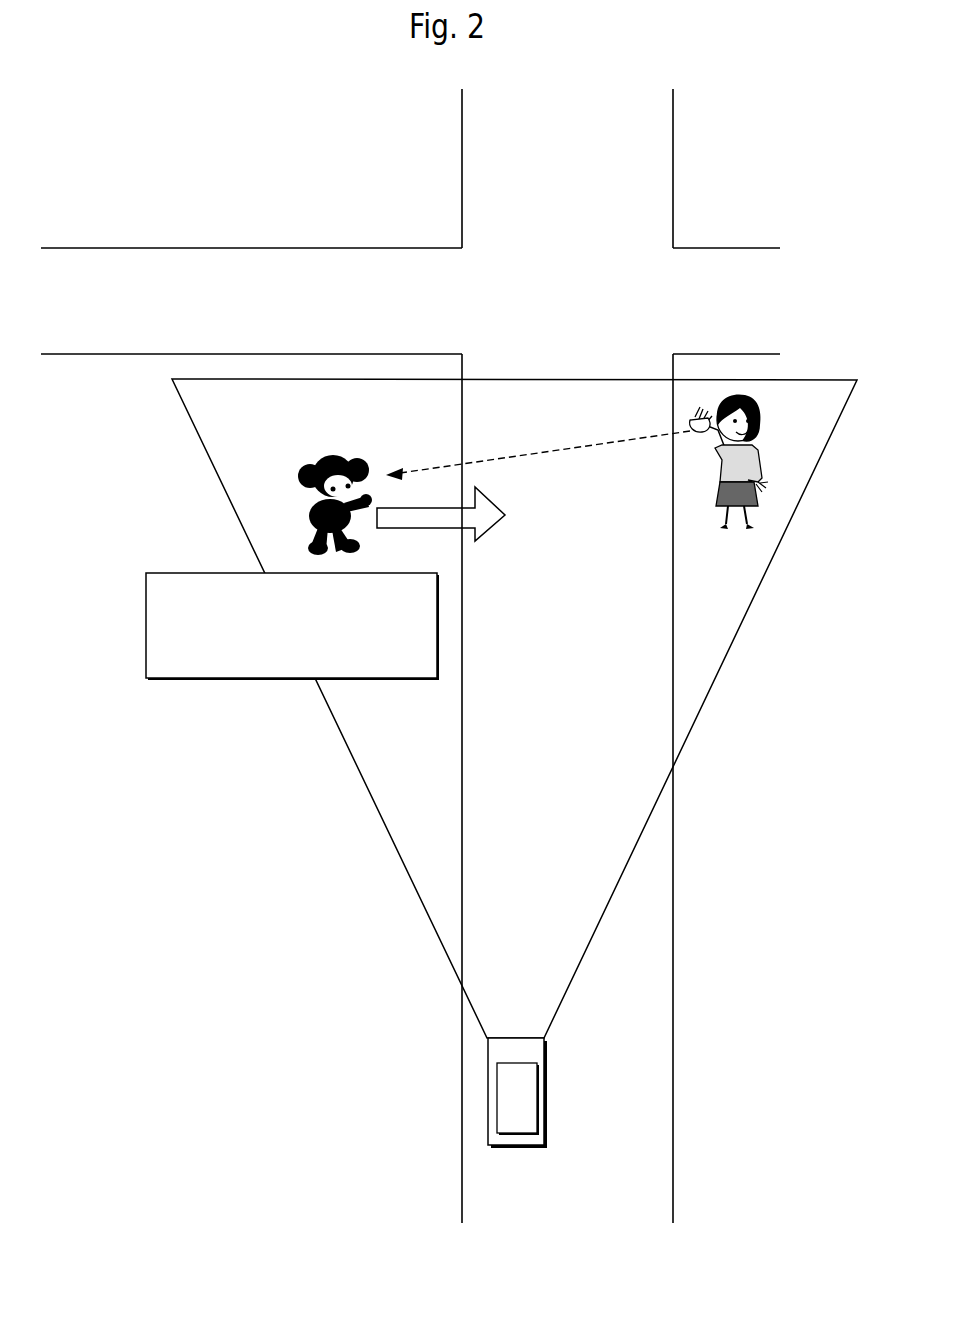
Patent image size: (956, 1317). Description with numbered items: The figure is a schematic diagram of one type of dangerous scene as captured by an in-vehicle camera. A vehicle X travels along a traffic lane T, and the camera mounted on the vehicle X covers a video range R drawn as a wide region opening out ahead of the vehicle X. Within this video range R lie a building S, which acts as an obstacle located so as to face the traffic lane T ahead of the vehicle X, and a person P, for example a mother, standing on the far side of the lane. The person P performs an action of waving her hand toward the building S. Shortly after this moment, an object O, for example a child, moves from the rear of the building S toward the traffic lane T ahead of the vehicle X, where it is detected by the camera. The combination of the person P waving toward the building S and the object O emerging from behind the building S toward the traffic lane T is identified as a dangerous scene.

The object (child) O is at (334, 458).
The person P is at (735, 512).
The building S is at (220, 681).
The video range R is at (385, 829).
The traffic lane T is at (674, 930).
The vehicle X is at (508, 1147).